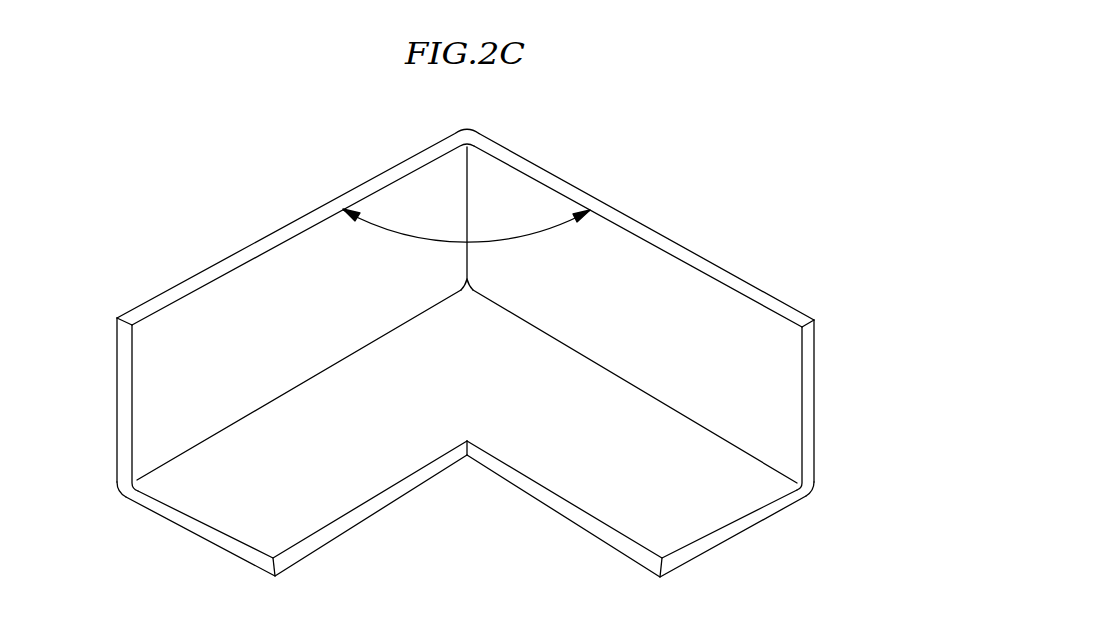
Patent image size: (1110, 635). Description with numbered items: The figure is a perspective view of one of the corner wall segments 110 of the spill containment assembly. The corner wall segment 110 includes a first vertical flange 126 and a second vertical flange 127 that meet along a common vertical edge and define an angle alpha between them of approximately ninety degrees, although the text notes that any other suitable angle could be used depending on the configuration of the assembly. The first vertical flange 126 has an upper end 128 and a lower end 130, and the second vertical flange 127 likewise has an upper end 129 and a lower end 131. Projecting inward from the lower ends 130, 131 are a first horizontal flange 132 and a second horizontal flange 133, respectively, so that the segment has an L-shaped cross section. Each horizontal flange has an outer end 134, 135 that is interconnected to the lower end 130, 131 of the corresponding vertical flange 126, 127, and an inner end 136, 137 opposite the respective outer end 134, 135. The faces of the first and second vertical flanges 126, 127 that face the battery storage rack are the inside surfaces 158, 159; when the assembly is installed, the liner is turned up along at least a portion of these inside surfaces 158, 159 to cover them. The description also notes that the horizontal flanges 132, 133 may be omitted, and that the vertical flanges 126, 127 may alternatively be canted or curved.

The corner wall segment 110 is at (667, 183).
The first vertical flange 126 is at (277, 272).
The second vertical flange 127 is at (700, 297).
The upper end 128 is at (177, 288).
The upper end 129 is at (697, 256).
The lower end 130 is at (120, 483).
The lower end 131 is at (815, 485).
The first horizontal flange 132 is at (340, 488).
The second horizontal flange 133 is at (640, 492).
The outer end 134 is at (129, 498).
The outer end 135 is at (810, 497).
The inner end 136 is at (305, 547).
The inner end 137 is at (636, 553).
The inside surface 158 is at (291, 344).
The inside surface 159 is at (688, 347).
The angle alpha is at (497, 245).